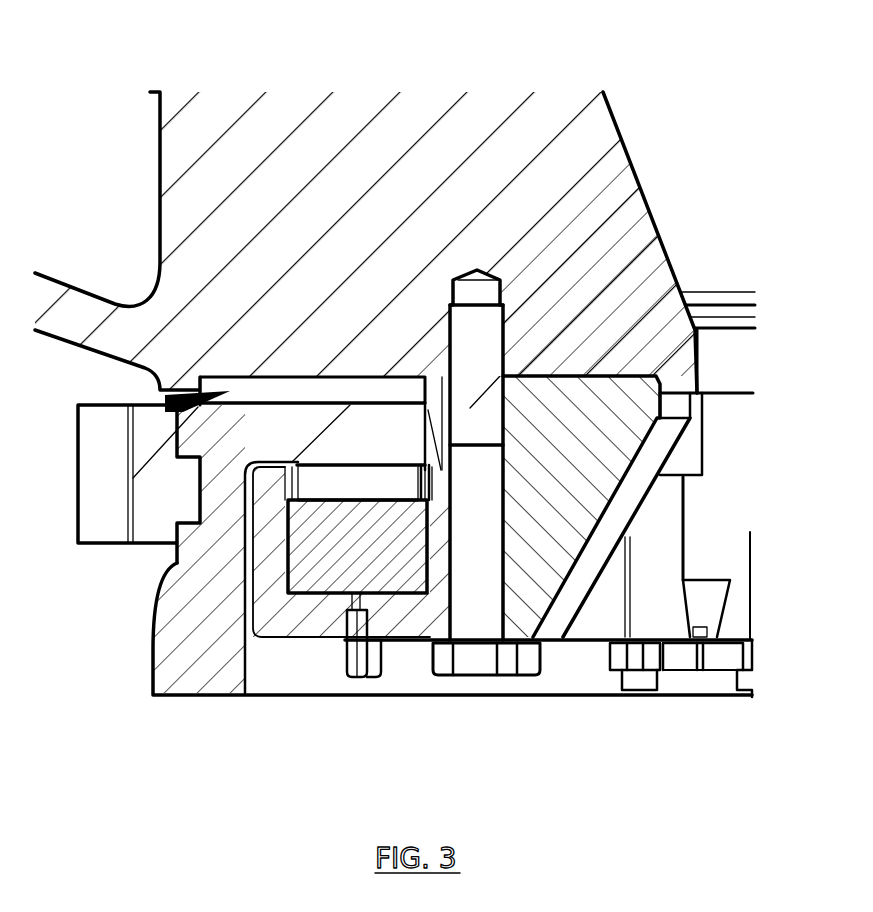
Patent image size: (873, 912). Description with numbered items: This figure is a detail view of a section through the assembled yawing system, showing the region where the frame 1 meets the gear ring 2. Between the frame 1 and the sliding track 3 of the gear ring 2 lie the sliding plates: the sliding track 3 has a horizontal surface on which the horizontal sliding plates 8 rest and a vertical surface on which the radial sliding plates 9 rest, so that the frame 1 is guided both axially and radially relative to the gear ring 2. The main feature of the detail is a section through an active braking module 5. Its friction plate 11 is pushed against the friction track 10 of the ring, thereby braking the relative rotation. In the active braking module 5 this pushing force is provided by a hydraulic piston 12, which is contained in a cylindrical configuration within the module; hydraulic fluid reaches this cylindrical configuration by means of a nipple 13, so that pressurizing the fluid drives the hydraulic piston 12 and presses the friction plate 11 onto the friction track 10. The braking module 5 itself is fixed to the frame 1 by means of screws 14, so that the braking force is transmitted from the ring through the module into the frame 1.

The frame 1 is at (392, 190).
The gear ring 2 is at (182, 662).
The sliding track 3 is at (320, 405).
The active braking module 5 is at (548, 565).
The horizontal sliding plates 8 is at (165, 403).
The radial sliding plates 9 is at (449, 452).
The friction track 10 is at (368, 478).
The friction plate 11 is at (282, 505).
The hydraulic piston 12 is at (317, 597).
The nipple 13 is at (355, 662).
The screws 14 is at (647, 207).